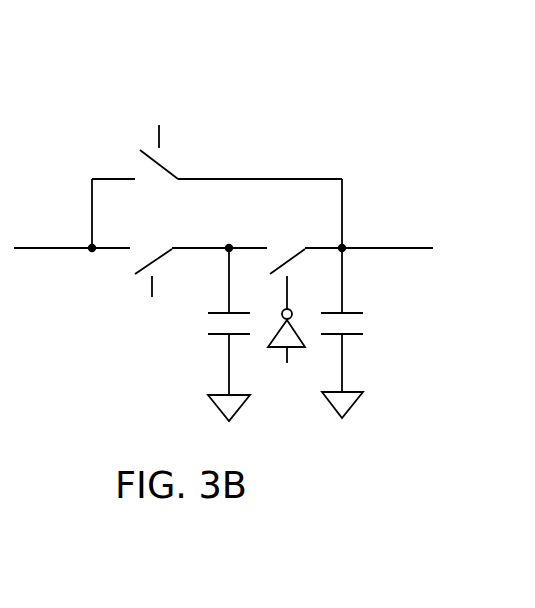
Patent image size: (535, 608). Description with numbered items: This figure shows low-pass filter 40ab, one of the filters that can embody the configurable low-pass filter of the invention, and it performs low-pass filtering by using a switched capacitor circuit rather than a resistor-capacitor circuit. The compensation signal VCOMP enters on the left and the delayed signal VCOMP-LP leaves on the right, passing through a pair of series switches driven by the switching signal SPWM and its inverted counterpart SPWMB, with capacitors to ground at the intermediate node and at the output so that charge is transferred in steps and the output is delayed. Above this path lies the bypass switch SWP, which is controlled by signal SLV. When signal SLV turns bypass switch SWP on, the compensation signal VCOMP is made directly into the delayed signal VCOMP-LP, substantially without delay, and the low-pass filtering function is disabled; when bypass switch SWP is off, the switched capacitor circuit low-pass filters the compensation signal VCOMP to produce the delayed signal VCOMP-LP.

The low-pass filter 40ab is at (196, 84).
The bypass switch SWP is at (217, 199).
The signal SLV is at (171, 124).
The compensation signal VCOMP is at (69, 234).
The switching signal SPWM is at (155, 289).
The delayed signal VCOMP-LP is at (374, 233).
The inverted switching signal SPWMB is at (289, 333).